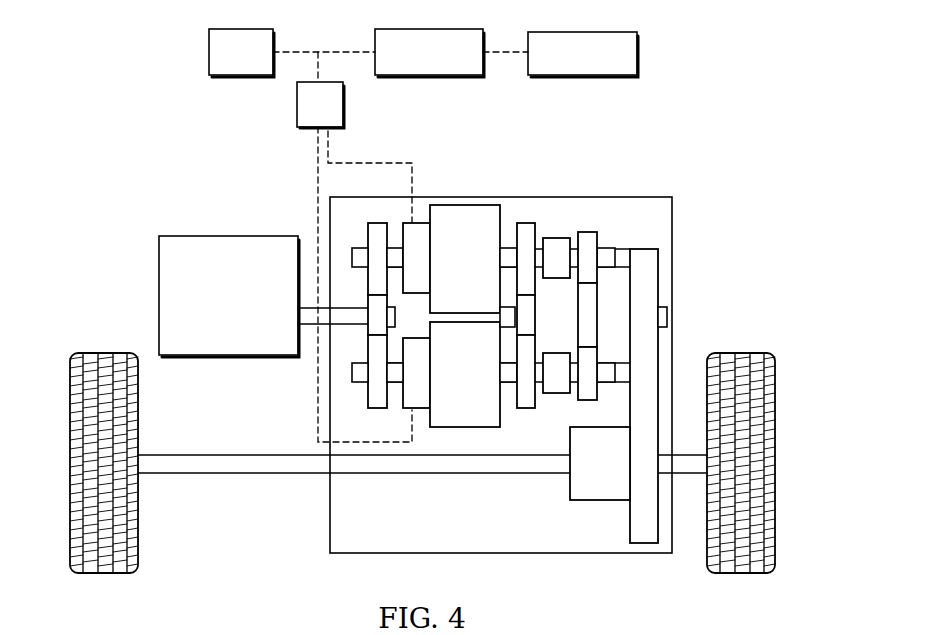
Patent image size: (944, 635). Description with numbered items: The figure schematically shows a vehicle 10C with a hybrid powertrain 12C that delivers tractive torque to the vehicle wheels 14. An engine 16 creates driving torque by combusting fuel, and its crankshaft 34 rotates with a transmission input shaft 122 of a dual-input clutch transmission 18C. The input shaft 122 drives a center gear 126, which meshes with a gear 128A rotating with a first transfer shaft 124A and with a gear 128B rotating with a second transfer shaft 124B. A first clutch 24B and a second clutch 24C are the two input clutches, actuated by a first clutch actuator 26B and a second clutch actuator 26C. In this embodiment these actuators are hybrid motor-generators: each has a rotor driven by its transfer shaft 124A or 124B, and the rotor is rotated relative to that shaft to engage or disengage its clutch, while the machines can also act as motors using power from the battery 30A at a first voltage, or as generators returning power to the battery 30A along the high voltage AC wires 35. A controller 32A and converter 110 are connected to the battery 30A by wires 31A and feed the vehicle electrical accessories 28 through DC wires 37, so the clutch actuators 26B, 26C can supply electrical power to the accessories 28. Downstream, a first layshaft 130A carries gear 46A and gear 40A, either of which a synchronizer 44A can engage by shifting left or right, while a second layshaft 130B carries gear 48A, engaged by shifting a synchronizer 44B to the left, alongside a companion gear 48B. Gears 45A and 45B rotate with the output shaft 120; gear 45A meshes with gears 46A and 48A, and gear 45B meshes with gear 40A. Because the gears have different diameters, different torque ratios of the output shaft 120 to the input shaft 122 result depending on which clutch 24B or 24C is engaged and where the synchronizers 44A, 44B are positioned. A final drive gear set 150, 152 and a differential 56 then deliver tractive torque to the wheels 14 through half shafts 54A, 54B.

The vehicle 10C is at (737, 212).
The powertrain 12C is at (132, 208).
The vehicle wheels 14 is at (67, 465).
The engine 16 is at (229, 296).
The dual-input clutch transmission 18C is at (645, 197).
The first clutch 24B is at (473, 259).
The second clutch 24C is at (473, 374).
The first clutch actuator 26B is at (418, 223).
The second clutch actuator 26C is at (422, 410).
The vehicle electrical accessories 28 is at (583, 54).
The battery 30A is at (241, 53).
The wires 31A is at (301, 50).
The controller 32A is at (320, 105).
The crankshaft 34 is at (300, 327).
The high voltage AC power wires 35 is at (357, 160).
The DC wires 37 is at (507, 50).
The gear 40A is at (600, 232).
The synchronizer 44A is at (592, 232).
The synchronizer 44B is at (552, 394).
The gear 45A is at (502, 325).
The gear 45B is at (597, 300).
The gear 46A is at (550, 238).
The gear 48A is at (525, 410).
The gear 48B is at (597, 390).
The half shaft 54A is at (240, 474).
The half shaft 54B is at (688, 475).
The differential 56 is at (600, 463).
The converter 110 is at (429, 53).
The output shaft 120 is at (668, 318).
The transmission input shaft 122 is at (352, 306).
The first transfer shaft 124A is at (395, 247).
The second transfer shaft 124B is at (402, 390).
The center gear 126 is at (351, 375).
The gear 128A is at (368, 237).
The gear 128B is at (366, 395).
The first layshaft 130A is at (514, 247).
The second layshaft 130B is at (516, 340).
The final drive gear set 150 is at (659, 280).
The final drive gear set 152 is at (630, 522).